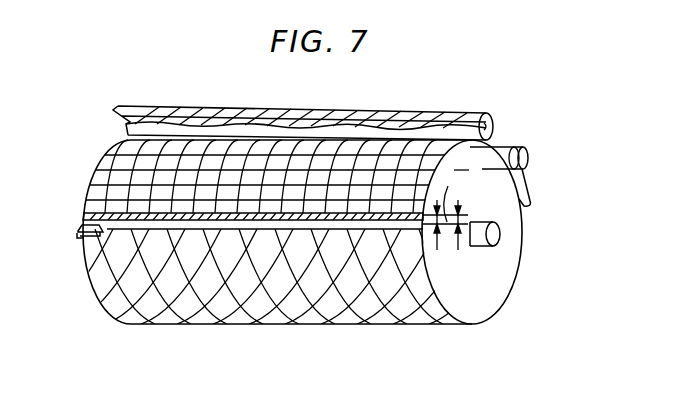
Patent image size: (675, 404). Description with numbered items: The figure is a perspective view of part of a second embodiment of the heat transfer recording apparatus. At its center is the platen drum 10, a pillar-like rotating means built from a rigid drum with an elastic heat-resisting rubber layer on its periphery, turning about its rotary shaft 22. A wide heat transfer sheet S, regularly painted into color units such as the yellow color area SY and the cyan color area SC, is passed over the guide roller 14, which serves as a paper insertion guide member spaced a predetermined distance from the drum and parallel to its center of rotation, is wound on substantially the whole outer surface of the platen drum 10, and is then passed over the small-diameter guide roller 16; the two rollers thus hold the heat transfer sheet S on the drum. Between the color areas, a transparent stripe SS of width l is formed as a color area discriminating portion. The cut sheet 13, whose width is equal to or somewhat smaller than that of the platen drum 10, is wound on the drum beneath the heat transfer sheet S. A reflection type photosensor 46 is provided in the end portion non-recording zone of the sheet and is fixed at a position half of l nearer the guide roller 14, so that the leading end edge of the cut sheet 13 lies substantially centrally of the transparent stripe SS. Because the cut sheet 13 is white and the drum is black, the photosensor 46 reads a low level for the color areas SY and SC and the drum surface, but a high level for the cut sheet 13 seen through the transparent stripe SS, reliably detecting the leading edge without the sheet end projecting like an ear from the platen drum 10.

The platen drum 10 is at (494, 297).
The cut sheet 13 is at (268, 218).
The guide roller 14 is at (487, 113).
The small-diameter guide roller 16 is at (518, 148).
The rotary shaft 22 is at (500, 235).
The reflection type photosensor 46 is at (80, 237).
The yellow color area SY is at (110, 172).
The cyan color area SC is at (368, 310).
The transparent stripe SS is at (112, 288).
The heat transfer sheet S is at (167, 303).
The width of the transparent stripe l is at (458, 222).